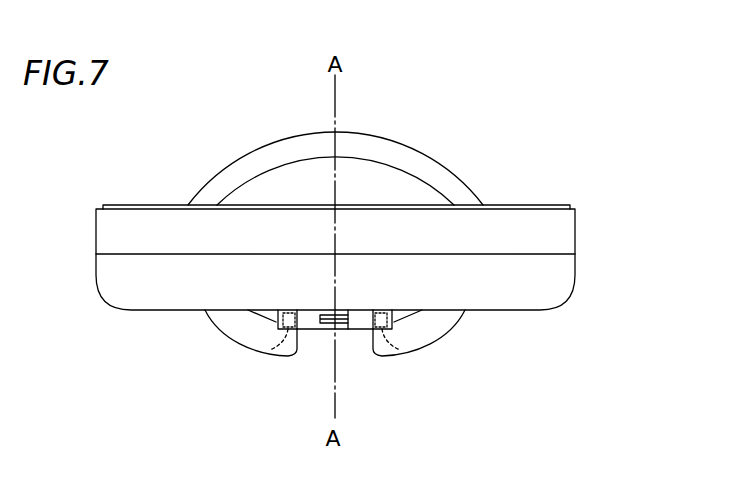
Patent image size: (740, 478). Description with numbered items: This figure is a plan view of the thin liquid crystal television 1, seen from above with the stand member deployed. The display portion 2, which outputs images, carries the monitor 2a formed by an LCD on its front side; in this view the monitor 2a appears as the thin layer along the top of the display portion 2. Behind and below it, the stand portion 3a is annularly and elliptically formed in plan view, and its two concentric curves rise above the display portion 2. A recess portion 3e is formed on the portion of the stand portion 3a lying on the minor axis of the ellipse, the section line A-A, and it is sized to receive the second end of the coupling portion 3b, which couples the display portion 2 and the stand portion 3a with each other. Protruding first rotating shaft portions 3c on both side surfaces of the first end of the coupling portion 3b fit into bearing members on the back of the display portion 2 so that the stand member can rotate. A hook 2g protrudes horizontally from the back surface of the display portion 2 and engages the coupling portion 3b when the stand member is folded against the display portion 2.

The thin liquid crystal television 1 is at (605, 115).
The display portion 2 is at (562, 294).
The monitor 2a is at (567, 205).
The hook 2g is at (348, 330).
The stand portion 3a is at (440, 163).
The coupling portion 3b is at (304, 316).
The first rotating shaft portions 3c is at (286, 350).
The recess portion 3e is at (297, 349).